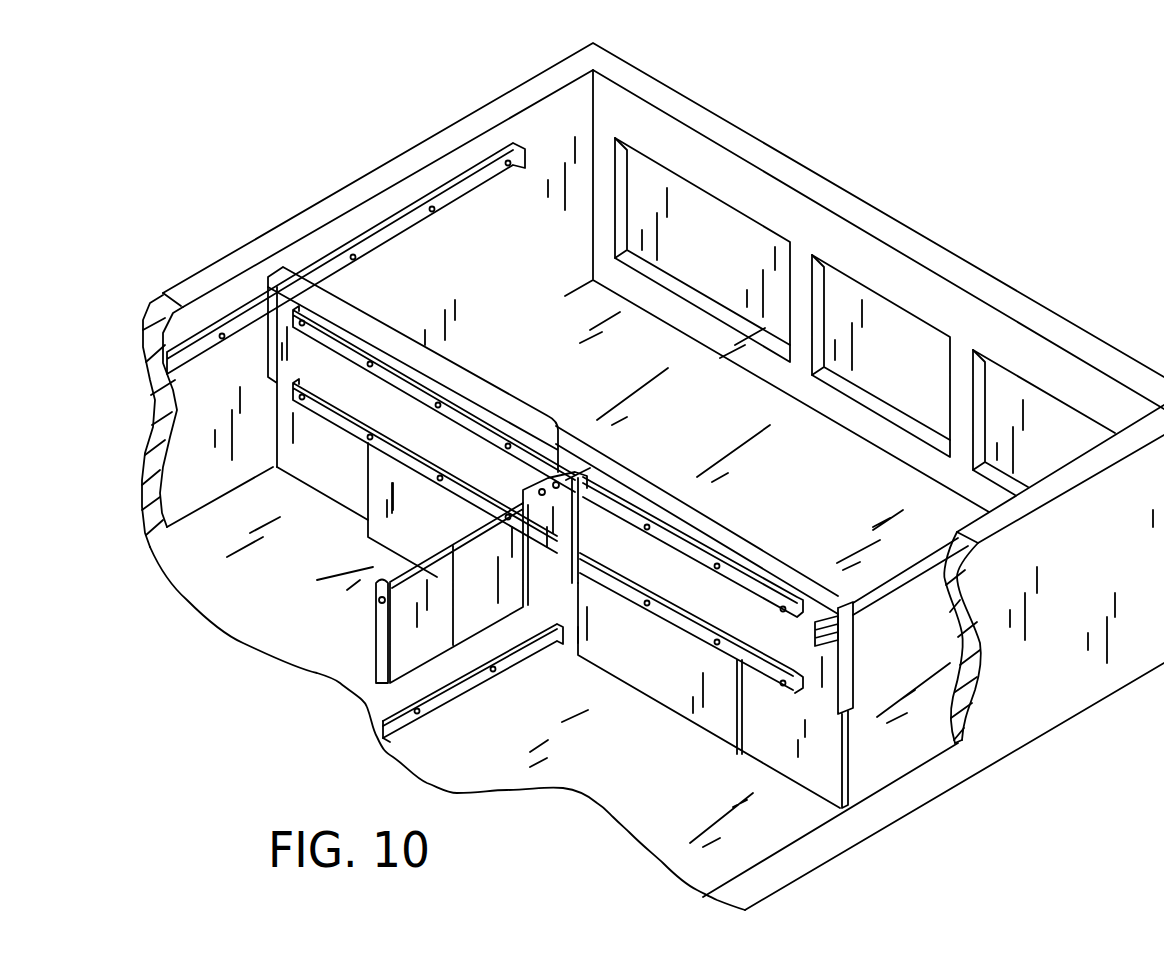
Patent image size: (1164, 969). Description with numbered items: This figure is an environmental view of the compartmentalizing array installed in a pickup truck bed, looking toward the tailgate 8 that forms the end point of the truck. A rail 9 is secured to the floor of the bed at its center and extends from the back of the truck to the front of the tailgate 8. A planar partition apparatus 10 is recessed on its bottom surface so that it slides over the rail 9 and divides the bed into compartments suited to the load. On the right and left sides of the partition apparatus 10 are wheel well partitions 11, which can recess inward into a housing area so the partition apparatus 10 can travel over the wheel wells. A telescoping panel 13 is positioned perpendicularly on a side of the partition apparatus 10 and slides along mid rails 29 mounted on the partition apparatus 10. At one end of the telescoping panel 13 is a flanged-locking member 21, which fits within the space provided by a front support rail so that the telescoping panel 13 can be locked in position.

The tailgate 8 is at (723, 133).
The rail 9 is at (384, 730).
The partition apparatus 10 is at (755, 685).
The wheel well partitions 11 is at (518, 389).
The telescoping panel 13 is at (393, 738).
The flanged-locking member 21 is at (377, 660).
The mid rails 29 is at (670, 540).